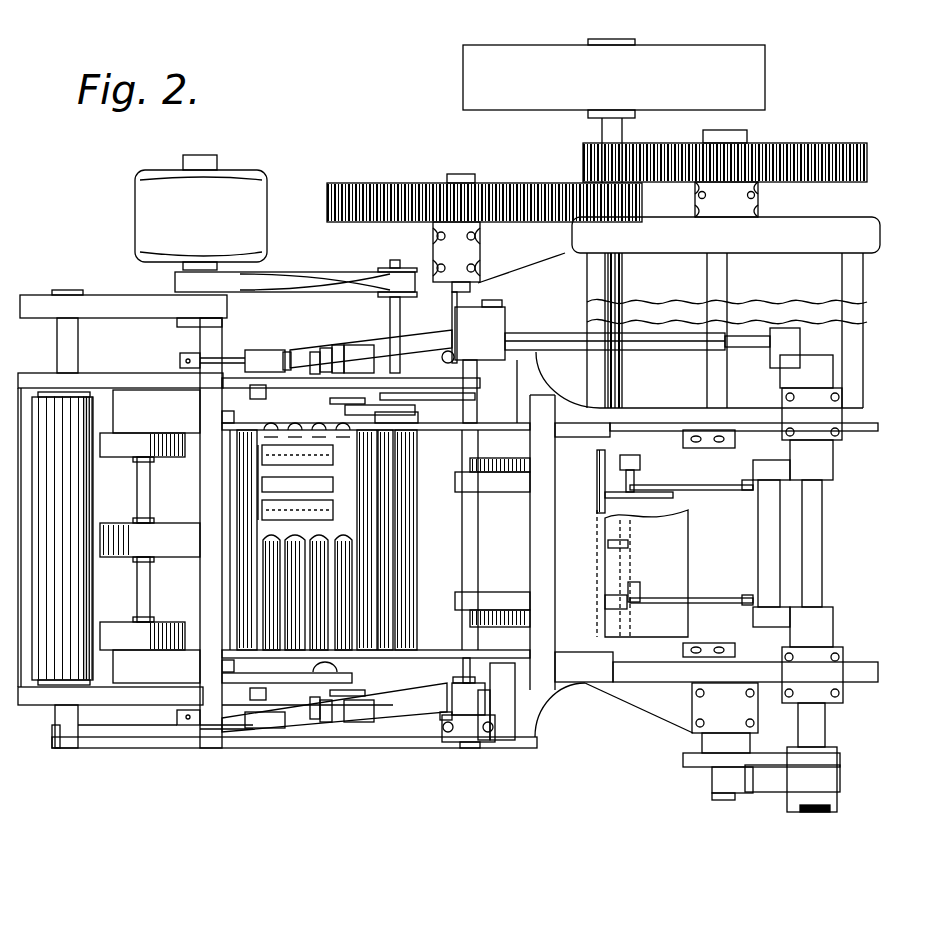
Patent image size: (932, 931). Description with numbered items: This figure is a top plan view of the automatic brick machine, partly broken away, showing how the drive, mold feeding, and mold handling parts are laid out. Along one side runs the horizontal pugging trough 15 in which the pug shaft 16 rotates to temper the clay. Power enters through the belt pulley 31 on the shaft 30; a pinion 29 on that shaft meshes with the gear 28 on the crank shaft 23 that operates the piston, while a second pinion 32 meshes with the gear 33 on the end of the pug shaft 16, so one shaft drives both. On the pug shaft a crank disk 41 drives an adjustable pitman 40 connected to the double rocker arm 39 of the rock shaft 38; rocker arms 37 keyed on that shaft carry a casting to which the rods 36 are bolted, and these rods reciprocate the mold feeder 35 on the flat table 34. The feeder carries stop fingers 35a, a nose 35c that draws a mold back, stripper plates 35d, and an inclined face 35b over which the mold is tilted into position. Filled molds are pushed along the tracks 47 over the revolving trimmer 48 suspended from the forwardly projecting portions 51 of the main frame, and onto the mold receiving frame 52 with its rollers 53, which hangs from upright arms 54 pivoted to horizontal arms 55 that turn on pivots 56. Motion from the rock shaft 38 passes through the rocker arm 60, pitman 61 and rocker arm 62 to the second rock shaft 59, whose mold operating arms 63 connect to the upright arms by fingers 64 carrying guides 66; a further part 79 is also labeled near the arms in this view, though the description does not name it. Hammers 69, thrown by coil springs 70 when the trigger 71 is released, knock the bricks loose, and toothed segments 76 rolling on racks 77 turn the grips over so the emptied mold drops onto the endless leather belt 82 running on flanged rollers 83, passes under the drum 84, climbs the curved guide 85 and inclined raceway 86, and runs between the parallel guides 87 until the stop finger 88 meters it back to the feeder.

The pugging trough 15 is at (727, 330).
The pug shaft 16 is at (712, 376).
The crank shaft 23 is at (452, 293).
The gear 28 is at (506, 193).
The pinion 29 is at (697, 190).
The shaft 30 is at (600, 123).
The belt pulley 31 is at (614, 78).
The pinion 32 is at (624, 136).
The gear 33 is at (778, 150).
The flat table 34 is at (716, 552).
The mold feeder 35 is at (680, 535).
The stop fingers 35a is at (637, 582).
The inclined face 35b is at (608, 544).
The nose 35c is at (605, 582).
The stripper plates 35d is at (683, 443).
The rods 36 is at (706, 486).
The rocker arms 37 is at (775, 462).
The rock shaft 38 is at (822, 530).
The double rocker arm 39 is at (820, 795).
The pitman 40 is at (732, 792).
The crank disk 41 is at (688, 760).
The tracks 47 is at (458, 668).
The trimmer 48 is at (417, 422).
The forwardly projecting portions of the main frame 51 is at (498, 745).
The mold receiving frame 52 is at (355, 346).
The rollers 53 is at (300, 470).
The upright arms 54 is at (362, 402).
The horizontal arms 55 is at (250, 392).
The pivot 56 is at (224, 416).
The second rock shaft 59 is at (470, 565).
The rocker arm 60 is at (806, 360).
The pitman 61 is at (578, 333).
The rocker arm 62 is at (500, 309).
The mold operating arms 63 is at (410, 338).
The fingers 64 is at (316, 350).
The guide 66 is at (338, 345).
The hammers 69 is at (250, 692).
The coil springs 70 is at (447, 351).
The trigger 71 is at (326, 347).
The toothed segments 76 is at (255, 352).
The rack 77 is at (225, 355).
The housing 79 is at (440, 716).
The endless leather belt 82 is at (62, 542).
The flanged rollers 83 is at (45, 396).
The drum 84 is at (130, 450).
The upwardly curved guide 85 is at (150, 536).
The inclined raceway 86 is at (410, 520).
The parallel guides 87 is at (520, 472).
The stop finger 88 is at (478, 495).